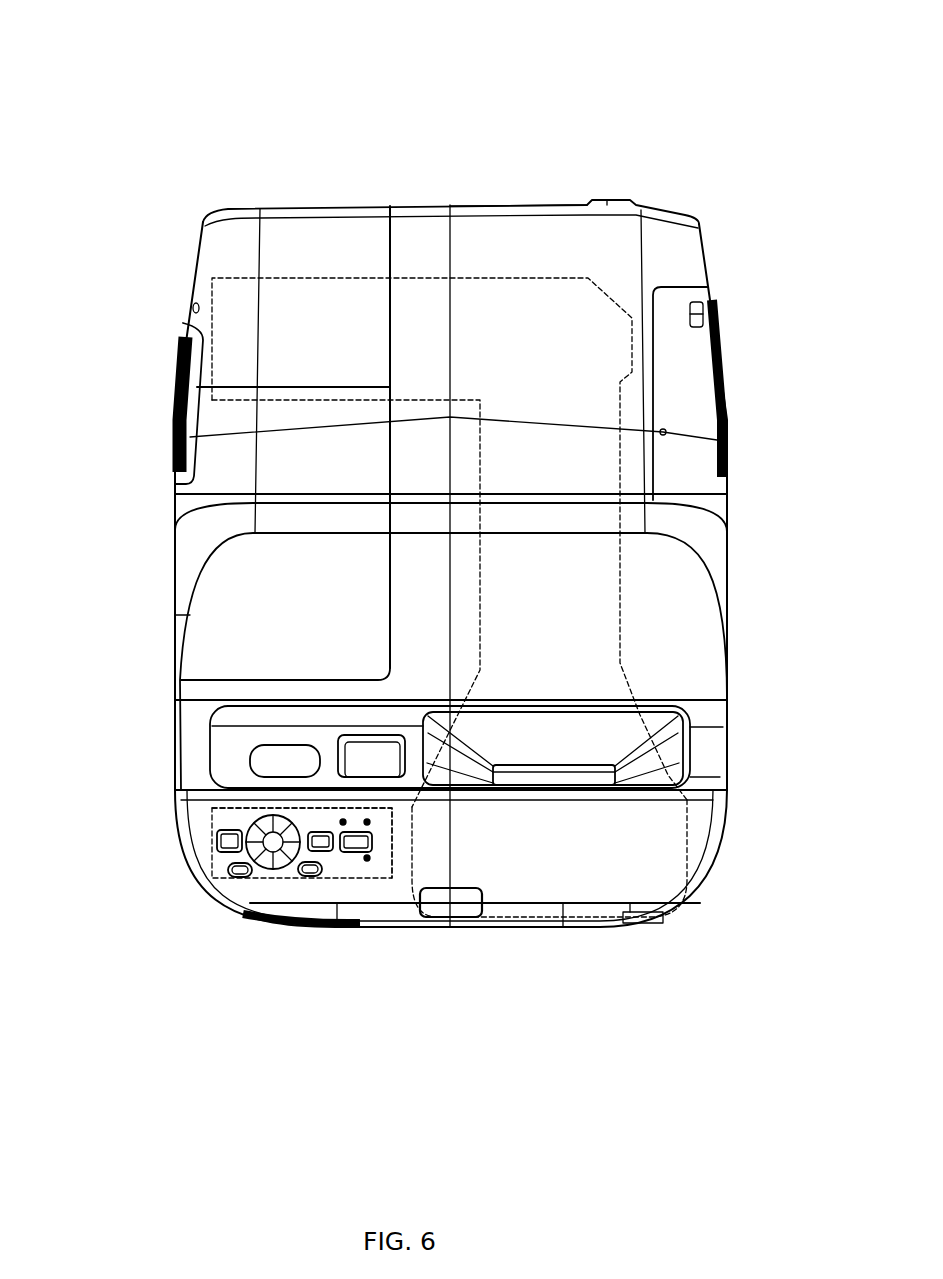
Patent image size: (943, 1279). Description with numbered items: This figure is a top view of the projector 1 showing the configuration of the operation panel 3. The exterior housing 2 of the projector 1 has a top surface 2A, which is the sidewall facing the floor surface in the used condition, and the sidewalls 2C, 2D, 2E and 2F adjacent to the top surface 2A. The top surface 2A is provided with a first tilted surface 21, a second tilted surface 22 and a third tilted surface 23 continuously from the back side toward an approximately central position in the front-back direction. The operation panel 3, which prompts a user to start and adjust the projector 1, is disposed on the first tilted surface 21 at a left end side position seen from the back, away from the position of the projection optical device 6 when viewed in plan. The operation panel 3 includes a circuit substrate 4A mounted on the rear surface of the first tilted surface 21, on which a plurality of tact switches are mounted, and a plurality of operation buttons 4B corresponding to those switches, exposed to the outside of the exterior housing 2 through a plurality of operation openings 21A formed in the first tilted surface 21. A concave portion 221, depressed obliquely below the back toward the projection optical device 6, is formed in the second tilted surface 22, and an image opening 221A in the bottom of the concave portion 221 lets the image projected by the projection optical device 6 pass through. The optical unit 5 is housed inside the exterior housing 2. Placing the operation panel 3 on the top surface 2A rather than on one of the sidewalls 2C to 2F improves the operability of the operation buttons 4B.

The projector 1 is at (106, 62).
The exterior housing 2 is at (697, 256).
The top surface 2A is at (418, 226).
The sidewall 2C is at (441, 930).
The sidewall 2D is at (730, 495).
The sidewall 2E is at (172, 505).
The sidewall 2F is at (505, 224).
The operation panel 3 is at (326, 991).
The circuit substrate 4A is at (333, 877).
The operation buttons 4B is at (217, 838).
The optical unit 5 is at (324, 276).
The projection optical device 6 is at (689, 841).
The first tilted surface 21 is at (403, 897).
The operation openings 21A is at (340, 831).
The second tilted surface 22 is at (220, 735).
The third tilted surface 23 is at (200, 633).
The concave portion 221 is at (608, 720).
The image opening 221A is at (566, 778).